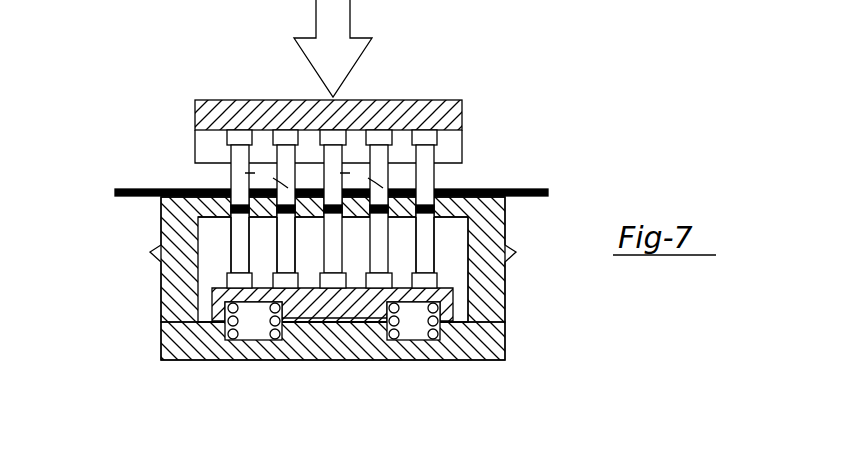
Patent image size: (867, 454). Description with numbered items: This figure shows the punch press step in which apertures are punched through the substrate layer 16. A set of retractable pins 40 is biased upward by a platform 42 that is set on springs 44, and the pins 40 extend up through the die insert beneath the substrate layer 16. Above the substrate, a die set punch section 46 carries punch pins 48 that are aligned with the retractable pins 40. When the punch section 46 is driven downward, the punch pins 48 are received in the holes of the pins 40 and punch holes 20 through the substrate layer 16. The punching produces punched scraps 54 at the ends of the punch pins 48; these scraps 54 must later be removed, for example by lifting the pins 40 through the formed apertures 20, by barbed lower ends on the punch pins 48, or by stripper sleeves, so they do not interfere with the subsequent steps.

The substrate layer 16 is at (512, 189).
The apertures 20 is at (237, 190).
The retractable pins 40 is at (283, 223).
The platform 42 is at (450, 302).
The springs 44 is at (428, 342).
The die set punch section 46 is at (460, 119).
The punch pins 48 is at (314, 177).
The punched scraps 54 is at (428, 216).